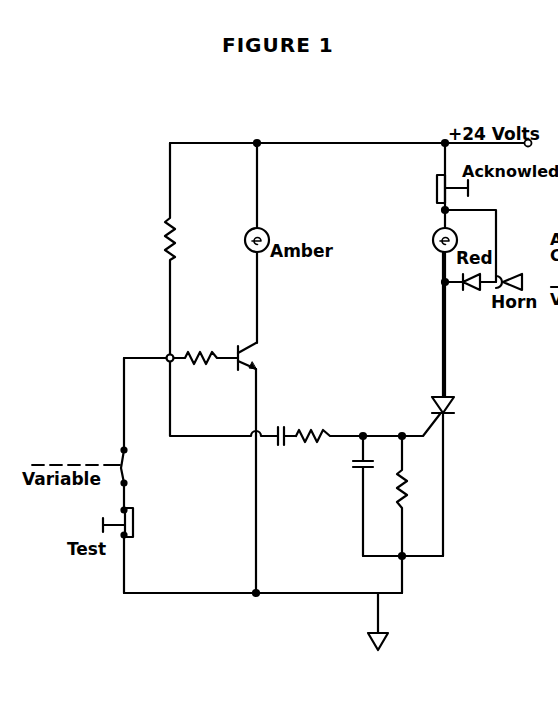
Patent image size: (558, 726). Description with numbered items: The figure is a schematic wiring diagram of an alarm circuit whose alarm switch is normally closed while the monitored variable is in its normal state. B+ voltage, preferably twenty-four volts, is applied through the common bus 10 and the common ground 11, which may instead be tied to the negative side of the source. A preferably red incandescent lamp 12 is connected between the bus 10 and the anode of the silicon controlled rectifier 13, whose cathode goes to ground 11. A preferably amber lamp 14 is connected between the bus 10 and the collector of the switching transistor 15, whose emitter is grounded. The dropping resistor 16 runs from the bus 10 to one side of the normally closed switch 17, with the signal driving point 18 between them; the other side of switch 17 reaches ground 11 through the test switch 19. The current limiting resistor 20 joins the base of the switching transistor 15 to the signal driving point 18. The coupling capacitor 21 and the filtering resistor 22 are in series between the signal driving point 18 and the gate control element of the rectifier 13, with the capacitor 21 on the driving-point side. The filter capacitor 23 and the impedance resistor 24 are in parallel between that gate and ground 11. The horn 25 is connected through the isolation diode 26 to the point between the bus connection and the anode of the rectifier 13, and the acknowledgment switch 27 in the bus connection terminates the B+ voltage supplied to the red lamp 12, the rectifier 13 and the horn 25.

The common bus 10 is at (355, 143).
The common ground 11 is at (312, 597).
The incandescent lamp 12 is at (448, 233).
The silicon controlled rectifier 13 is at (452, 405).
The lamp 14 is at (262, 228).
The switching transistor 15 is at (258, 351).
The dropping resistor 16 is at (177, 227).
The normally closed switch 17 is at (121, 456).
The signal driving point 18 is at (166, 355).
The test switch 19 is at (118, 517).
The current limiting resistor 20 is at (194, 353).
The coupling capacitor 21 is at (281, 426).
The filtering resistor 22 is at (327, 428).
The filter capacitor 23 is at (352, 463).
The impedance resistor 24 is at (407, 489).
The horn 25 is at (509, 273).
The isolation diode 26 is at (472, 291).
The acknowledgment switch 27 is at (437, 200).